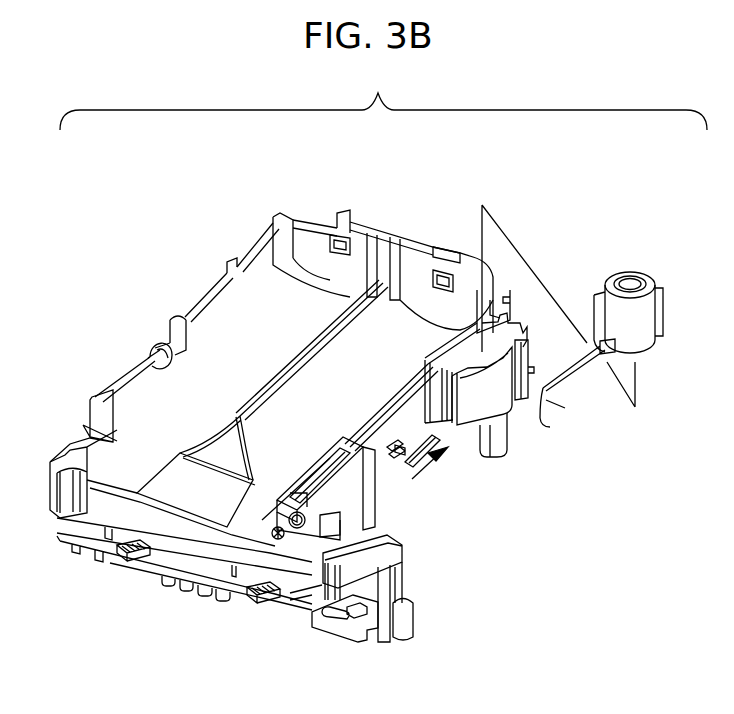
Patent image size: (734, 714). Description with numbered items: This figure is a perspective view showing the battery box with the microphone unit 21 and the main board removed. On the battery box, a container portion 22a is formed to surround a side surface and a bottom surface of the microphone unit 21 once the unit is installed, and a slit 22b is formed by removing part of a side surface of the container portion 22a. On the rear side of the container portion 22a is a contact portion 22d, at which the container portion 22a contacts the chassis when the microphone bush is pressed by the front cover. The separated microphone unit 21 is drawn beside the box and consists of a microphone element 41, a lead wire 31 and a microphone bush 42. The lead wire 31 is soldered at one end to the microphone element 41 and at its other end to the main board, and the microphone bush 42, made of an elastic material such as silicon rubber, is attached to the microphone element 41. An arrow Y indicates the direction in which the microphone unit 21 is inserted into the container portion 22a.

The microphone unit 21 is at (625, 271).
The microphone element 41 is at (633, 283).
The microphone bush 42 is at (607, 318).
The lead wire 31 is at (590, 370).
The container portion 22a is at (485, 397).
The slit 22b is at (450, 426).
The contact portion 22d is at (498, 440).
The insertion direction Y is at (412, 479).